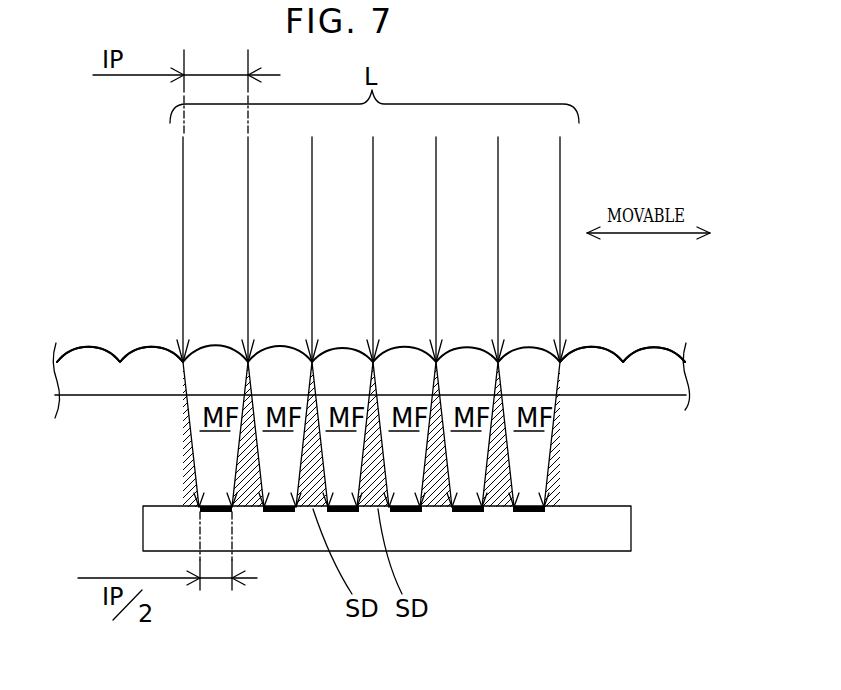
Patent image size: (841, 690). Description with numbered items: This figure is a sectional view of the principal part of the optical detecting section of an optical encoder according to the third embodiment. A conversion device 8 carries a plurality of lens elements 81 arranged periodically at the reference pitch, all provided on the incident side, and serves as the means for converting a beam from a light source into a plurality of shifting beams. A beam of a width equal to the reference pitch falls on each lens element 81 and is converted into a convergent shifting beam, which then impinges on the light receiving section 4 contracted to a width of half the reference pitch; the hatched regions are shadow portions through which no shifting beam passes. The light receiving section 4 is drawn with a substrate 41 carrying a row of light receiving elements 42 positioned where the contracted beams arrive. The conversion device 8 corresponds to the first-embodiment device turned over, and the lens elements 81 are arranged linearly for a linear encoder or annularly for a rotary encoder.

The light receiving section 4 is at (411, 557).
The substrate 41 is at (606, 542).
The light receiving elements 42 is at (220, 513).
The conversion device 8 is at (596, 378).
The lens elements 81 is at (210, 340).